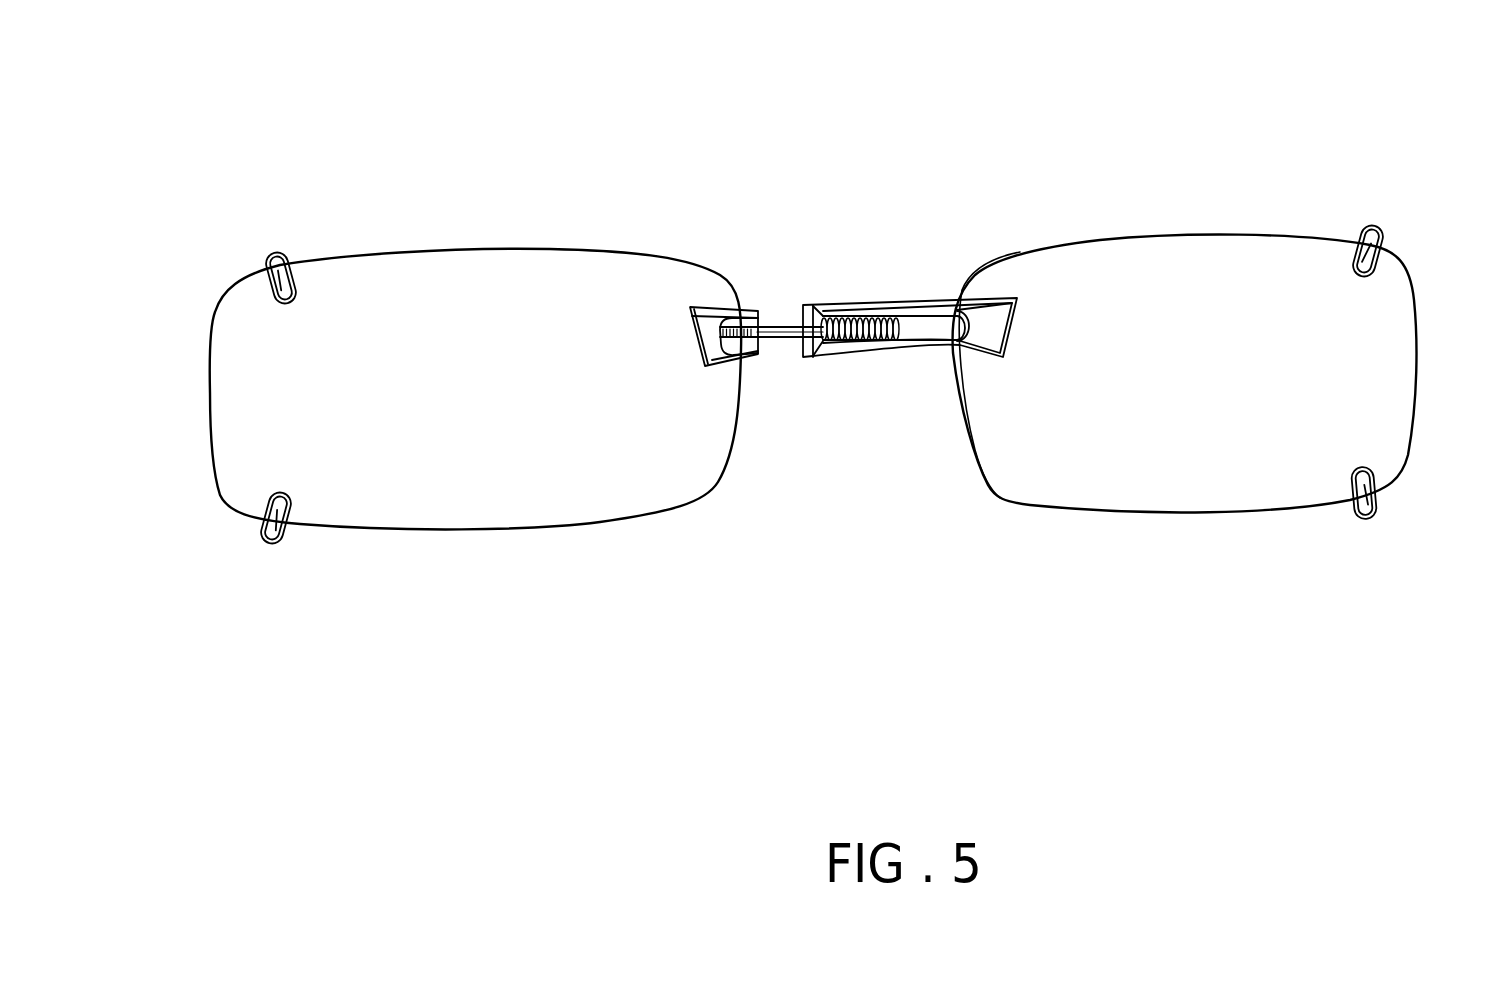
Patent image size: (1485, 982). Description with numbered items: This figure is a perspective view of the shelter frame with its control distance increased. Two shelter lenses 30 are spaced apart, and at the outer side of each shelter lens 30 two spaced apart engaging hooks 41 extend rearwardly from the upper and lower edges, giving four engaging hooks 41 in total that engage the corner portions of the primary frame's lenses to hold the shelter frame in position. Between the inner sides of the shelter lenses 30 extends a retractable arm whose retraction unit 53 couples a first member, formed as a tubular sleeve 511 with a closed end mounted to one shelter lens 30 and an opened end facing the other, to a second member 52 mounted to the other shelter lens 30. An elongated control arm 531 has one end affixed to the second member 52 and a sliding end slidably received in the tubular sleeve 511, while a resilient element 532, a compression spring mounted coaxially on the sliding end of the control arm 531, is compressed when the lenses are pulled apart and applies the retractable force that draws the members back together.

The shelter lens 30 is at (460, 433).
The engaging hook 41 is at (277, 255).
The second member 52 is at (688, 307).
The tubular sleeve 511 is at (907, 310).
The retraction unit 53 is at (830, 471).
The control arm 531 is at (783, 337).
The resilient element 532 is at (870, 347).